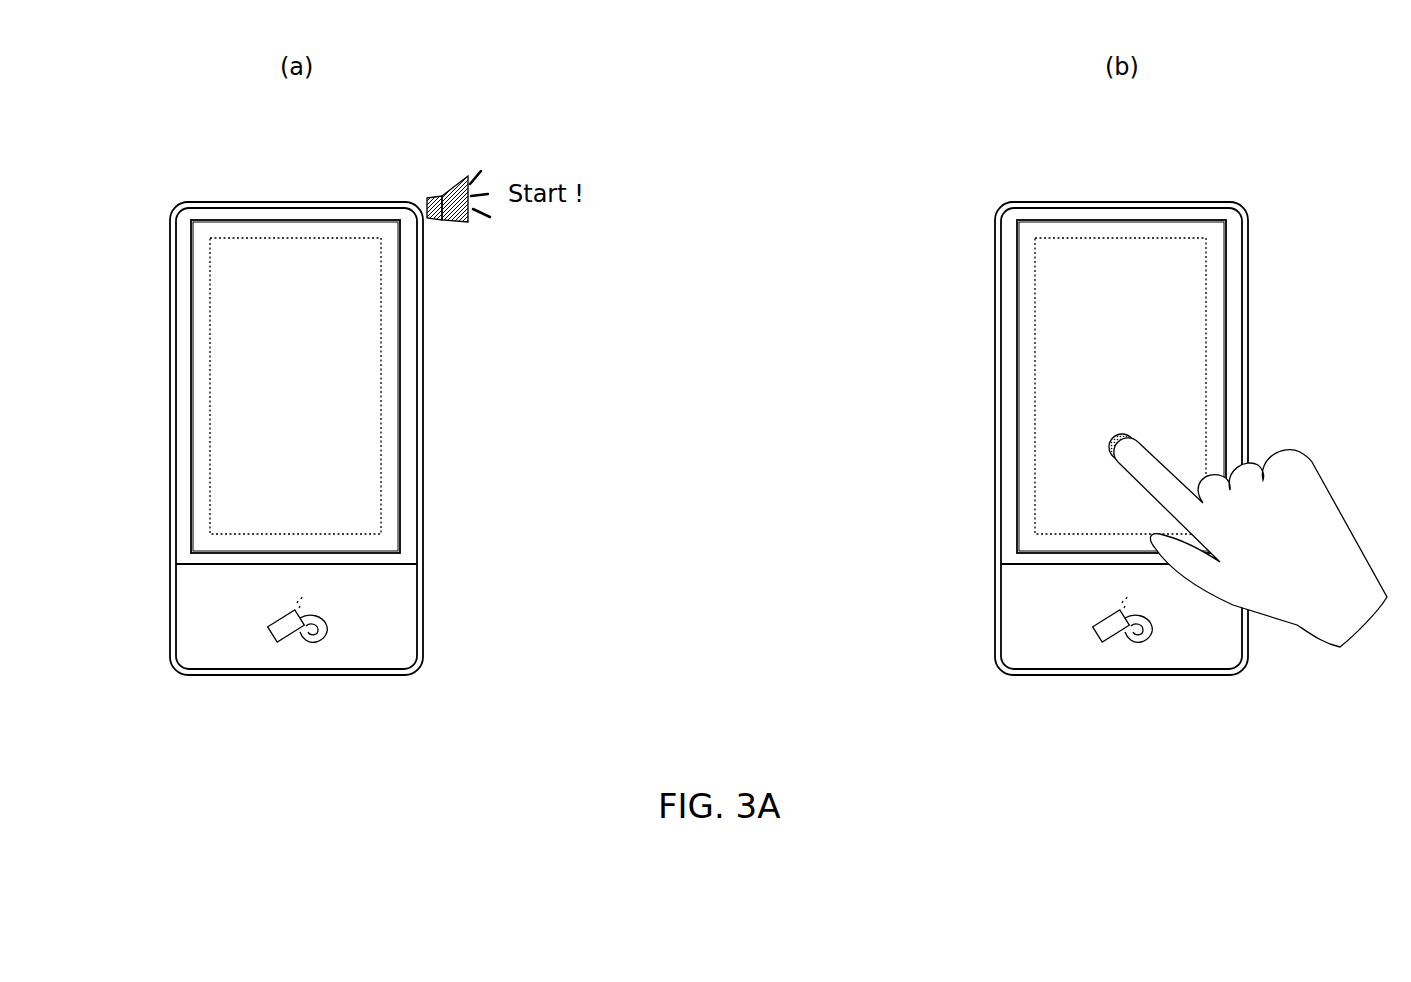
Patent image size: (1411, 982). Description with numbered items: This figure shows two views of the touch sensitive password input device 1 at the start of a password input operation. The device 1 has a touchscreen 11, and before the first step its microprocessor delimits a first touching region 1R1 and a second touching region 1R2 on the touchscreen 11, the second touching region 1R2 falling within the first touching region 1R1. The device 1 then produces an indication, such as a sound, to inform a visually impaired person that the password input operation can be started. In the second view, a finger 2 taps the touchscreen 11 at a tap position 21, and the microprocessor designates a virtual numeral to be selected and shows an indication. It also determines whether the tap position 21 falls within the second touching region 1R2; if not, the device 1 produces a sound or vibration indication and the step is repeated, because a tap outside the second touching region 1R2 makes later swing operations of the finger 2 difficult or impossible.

The touch sensitive password input device 1 is at (186, 201).
The touchscreen 11 is at (190, 280).
The first touching region 1R1 is at (392, 537).
The second touching region 1R2 is at (373, 443).
The tap position 21 is at (1130, 430).
The finger 2 is at (1330, 527).